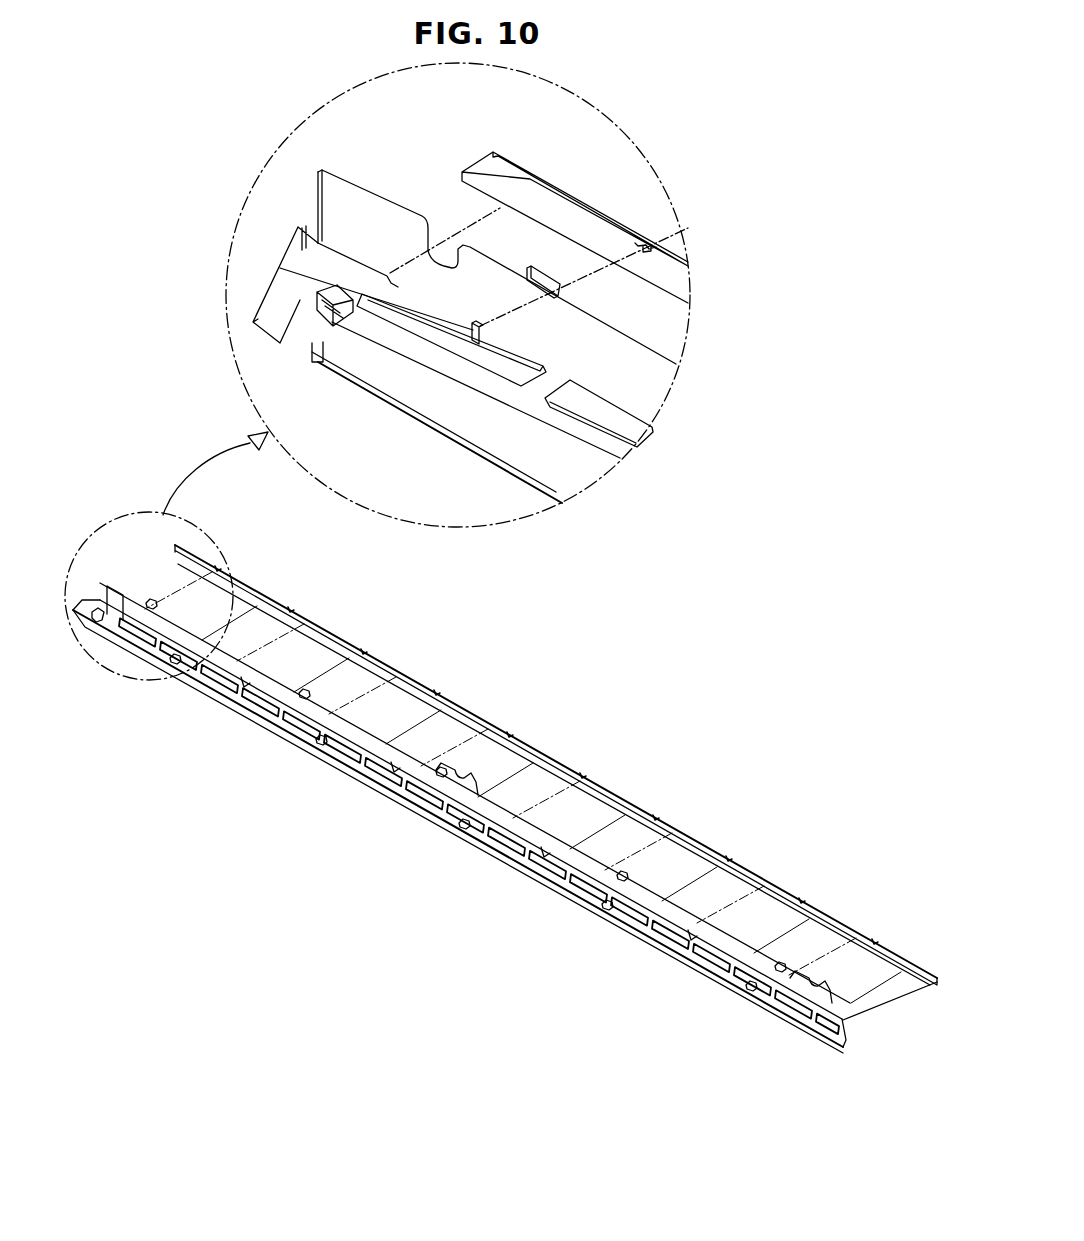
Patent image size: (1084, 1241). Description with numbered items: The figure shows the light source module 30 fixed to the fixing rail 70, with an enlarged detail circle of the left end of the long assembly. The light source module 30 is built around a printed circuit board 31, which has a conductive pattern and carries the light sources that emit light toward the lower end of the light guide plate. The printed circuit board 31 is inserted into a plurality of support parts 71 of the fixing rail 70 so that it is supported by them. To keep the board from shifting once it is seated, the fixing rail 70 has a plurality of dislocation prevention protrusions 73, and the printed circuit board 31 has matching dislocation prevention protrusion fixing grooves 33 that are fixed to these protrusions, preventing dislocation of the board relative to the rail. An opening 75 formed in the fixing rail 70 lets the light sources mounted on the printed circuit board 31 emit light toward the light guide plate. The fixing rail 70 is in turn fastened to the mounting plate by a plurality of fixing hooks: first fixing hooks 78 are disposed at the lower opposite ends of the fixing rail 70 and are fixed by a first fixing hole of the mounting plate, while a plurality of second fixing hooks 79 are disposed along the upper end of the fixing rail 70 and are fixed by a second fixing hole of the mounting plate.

The light source module 30 is at (401, 664).
The printed circuit board 31 is at (336, 630).
The dislocation prevention protrusion fixing groove 33 is at (371, 651).
The fixing rail 70 is at (270, 732).
The support part 71 is at (175, 664).
The dislocation prevention protrusion 73 is at (486, 345).
The opening 75 is at (427, 310).
The first fixing hook 78 is at (340, 332).
The second fixing hook 79 is at (559, 286).